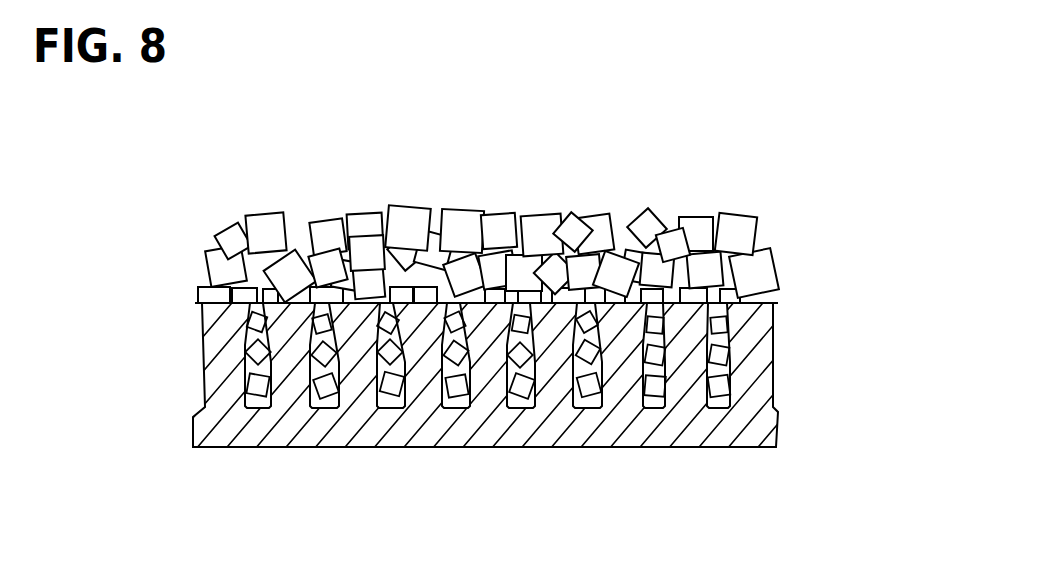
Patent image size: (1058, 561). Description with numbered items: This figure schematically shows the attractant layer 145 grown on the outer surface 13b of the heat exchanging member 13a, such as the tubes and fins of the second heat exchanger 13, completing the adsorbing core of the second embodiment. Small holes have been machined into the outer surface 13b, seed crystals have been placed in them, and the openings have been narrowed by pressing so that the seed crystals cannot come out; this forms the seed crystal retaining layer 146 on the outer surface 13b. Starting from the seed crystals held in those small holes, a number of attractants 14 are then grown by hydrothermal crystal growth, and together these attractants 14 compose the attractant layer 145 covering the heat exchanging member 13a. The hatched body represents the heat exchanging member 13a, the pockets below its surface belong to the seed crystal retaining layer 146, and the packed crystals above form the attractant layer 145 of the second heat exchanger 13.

The second heat exchanger 13 is at (495, 309).
The heat exchanging member 13a is at (578, 431).
The outer surface 13b is at (195, 398).
The attractants 14 is at (337, 259).
The attractant layer 145 is at (557, 224).
The seed crystal retaining layer 146 is at (683, 330).